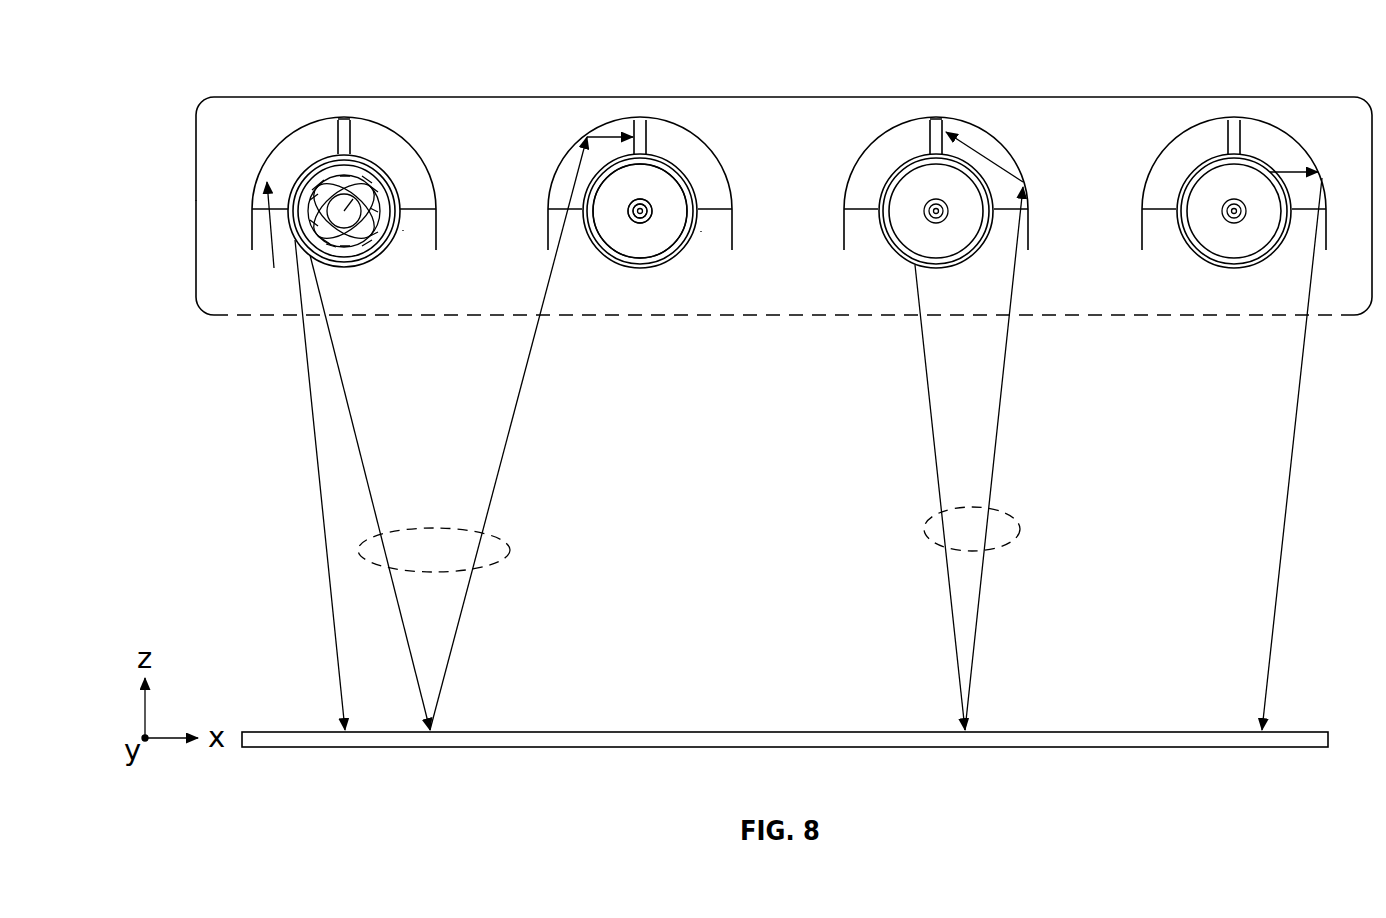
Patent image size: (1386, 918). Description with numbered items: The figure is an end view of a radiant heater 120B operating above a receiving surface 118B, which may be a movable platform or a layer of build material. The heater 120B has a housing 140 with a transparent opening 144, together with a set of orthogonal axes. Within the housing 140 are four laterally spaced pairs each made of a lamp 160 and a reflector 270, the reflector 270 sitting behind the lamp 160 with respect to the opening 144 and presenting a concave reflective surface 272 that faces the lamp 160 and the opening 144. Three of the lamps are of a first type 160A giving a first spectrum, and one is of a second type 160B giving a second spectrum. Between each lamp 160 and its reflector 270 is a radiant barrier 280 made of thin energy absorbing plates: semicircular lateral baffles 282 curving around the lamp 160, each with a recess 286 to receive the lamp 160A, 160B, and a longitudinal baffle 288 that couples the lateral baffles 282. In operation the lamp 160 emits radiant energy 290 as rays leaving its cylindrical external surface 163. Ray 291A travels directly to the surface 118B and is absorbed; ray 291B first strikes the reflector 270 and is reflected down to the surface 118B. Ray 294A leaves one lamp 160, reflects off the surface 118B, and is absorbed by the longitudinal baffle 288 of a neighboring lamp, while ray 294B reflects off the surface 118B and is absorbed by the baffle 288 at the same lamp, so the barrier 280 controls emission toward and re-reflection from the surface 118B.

The radiant heater 120B is at (202, 80).
The housing 140 is at (333, 97).
The transparent opening 144 is at (250, 318).
The radiant barrier 280 is at (336, 136).
The longitudinal baffle 288 is at (351, 136).
The lateral baffle 282 is at (384, 141).
The lamp 160 is at (757, 240).
The first type of lamp 160A is at (617, 255).
The second type of lamp 160B is at (356, 235).
The cylindrical external surface 163 is at (403, 230).
The reflector 270 is at (266, 182).
The concave reflective surface 272 is at (1020, 243).
The recess 286 is at (880, 190).
The radiant energy 290 is at (717, 433).
The ray 291A is at (318, 470).
The ray 291B is at (1292, 433).
The ray 294A is at (510, 553).
The ray 294B is at (1015, 537).
The receiving surface 118B is at (280, 732).